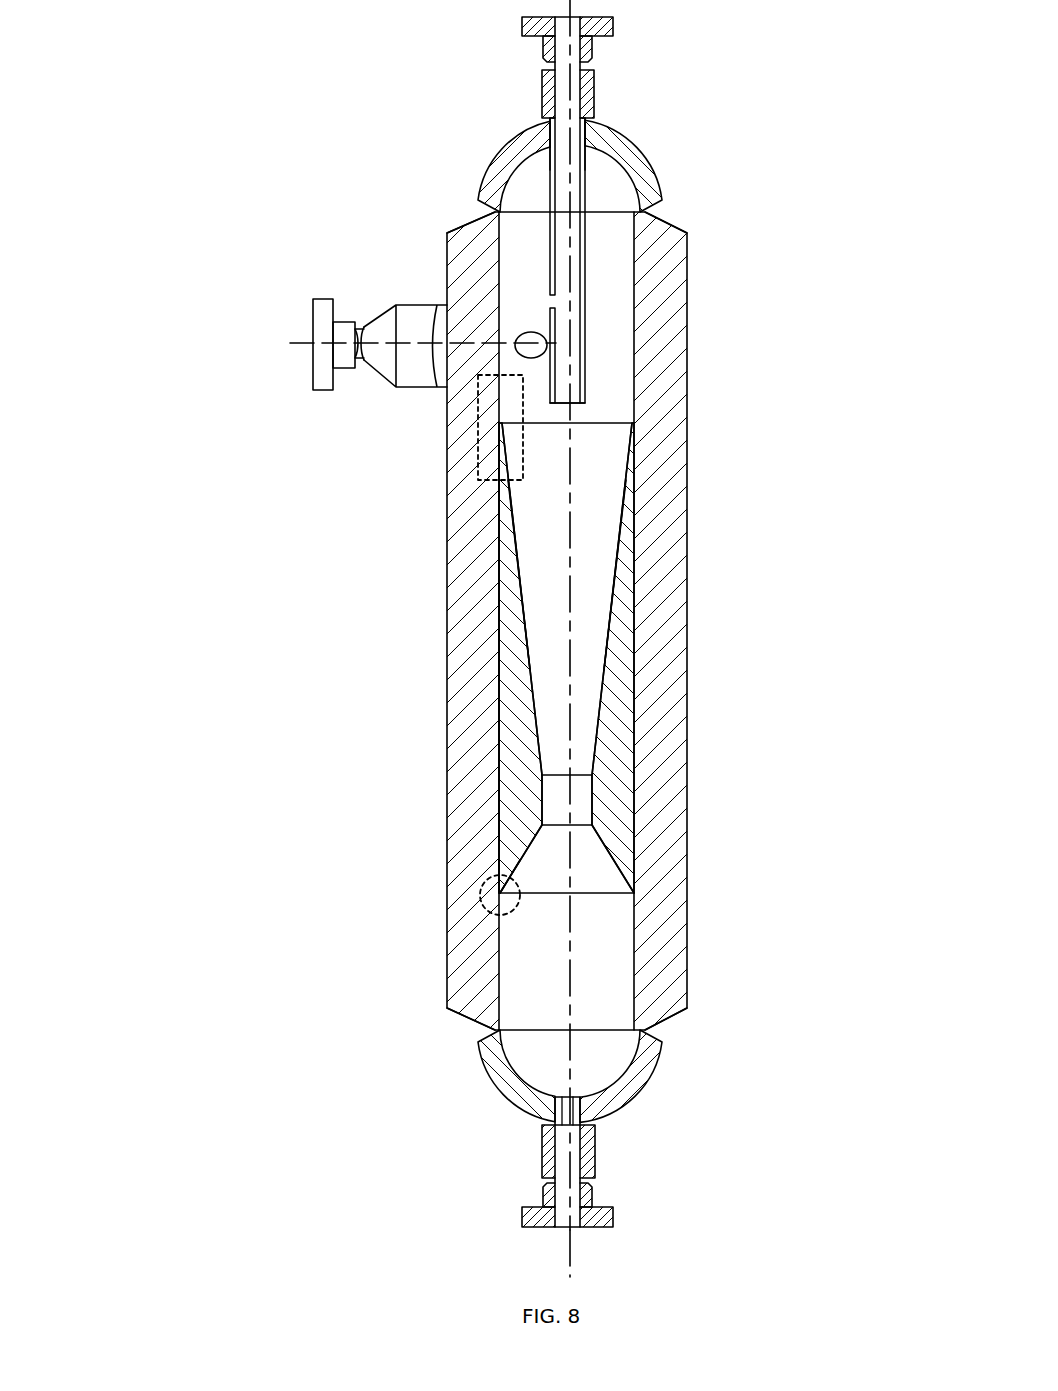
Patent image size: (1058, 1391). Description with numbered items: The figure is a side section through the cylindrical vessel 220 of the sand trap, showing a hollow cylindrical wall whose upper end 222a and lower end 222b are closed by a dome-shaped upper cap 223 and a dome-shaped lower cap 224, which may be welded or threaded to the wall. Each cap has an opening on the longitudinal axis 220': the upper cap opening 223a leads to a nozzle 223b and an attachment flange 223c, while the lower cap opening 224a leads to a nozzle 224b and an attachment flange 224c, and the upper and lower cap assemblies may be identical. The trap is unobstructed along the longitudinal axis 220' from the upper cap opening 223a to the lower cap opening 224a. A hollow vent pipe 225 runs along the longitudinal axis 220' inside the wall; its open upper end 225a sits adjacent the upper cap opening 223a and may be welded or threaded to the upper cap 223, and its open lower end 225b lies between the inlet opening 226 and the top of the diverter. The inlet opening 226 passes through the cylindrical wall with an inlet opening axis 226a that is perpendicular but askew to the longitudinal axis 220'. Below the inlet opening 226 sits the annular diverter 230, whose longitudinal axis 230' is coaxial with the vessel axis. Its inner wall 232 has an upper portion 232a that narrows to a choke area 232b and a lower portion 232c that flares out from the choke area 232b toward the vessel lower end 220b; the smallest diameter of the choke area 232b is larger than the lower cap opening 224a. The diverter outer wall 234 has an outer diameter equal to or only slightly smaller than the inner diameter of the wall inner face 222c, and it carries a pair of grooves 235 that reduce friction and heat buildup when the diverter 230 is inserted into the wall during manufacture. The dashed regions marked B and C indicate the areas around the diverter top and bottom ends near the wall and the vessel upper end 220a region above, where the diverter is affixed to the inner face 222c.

The cylindrical vessel 220 is at (474, 641).
The first end of separator 220a is at (495, 12).
The vessel lower end 220b is at (658, 1247).
The longitudinal axis 220' is at (463, 1253).
The cylindrical wall upper end 222a is at (483, 212).
The cylindrical wall lower end 222b is at (658, 1028).
The inner face 222c is at (637, 950).
The upper cap 223 is at (660, 198).
The upper cap opening 223a is at (556, 128).
The nozzle 223b is at (594, 97).
The attachment flange 223c is at (613, 16).
The lower cap 224 is at (650, 1068).
The lower cap opening 224a is at (560, 1111).
The nozzle 224b is at (593, 1161).
The attachment flange 224c is at (523, 1225).
The hollow vent pipe 225 is at (585, 277).
The open upper end 225a is at (545, 158).
The open lower end 225b is at (593, 397).
The inlet opening 226 is at (528, 333).
The inlet opening axis 226a is at (313, 342).
The diverter 230 is at (662, 658).
The diverter longitudinal axis 230' is at (457, 615).
The inner wall 232 is at (516, 532).
The upper portion 232a is at (532, 590).
The choke area 232b is at (545, 795).
The lower portion 232c is at (535, 855).
The outer wall 234 is at (500, 863).
The grooves 235 is at (500, 598).
The detail region B is at (478, 442).
The detail region C is at (488, 906).